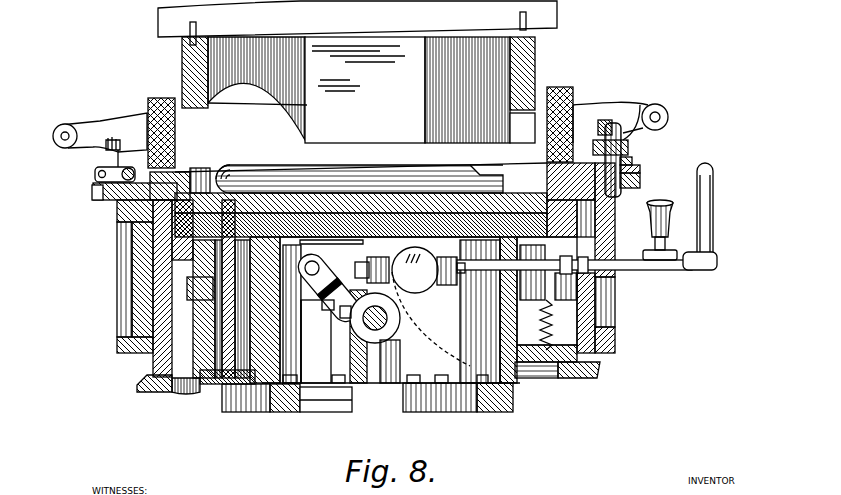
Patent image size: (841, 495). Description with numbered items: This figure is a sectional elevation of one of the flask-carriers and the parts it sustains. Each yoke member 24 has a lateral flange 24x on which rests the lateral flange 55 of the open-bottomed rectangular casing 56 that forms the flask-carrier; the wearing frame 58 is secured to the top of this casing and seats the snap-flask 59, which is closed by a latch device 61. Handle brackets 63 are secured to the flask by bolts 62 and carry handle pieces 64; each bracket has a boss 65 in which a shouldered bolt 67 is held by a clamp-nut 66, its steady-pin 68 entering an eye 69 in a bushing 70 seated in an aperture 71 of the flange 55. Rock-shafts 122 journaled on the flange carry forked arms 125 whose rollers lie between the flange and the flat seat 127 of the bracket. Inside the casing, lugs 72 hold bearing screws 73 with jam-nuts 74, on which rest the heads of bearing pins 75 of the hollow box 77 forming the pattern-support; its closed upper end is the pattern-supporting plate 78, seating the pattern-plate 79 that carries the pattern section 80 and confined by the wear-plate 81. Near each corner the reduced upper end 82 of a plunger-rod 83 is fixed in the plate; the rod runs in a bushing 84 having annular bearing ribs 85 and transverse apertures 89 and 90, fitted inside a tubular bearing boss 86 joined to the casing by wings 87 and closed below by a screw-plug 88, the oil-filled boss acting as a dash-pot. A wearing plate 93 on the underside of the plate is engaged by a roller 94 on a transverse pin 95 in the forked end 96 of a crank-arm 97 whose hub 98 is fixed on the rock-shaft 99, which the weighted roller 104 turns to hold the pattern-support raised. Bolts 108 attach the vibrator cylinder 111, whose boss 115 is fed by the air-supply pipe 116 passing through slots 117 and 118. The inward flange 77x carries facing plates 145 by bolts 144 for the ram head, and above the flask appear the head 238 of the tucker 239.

The head of the tucker 238 is at (357, 23).
The tucker 239 is at (358, 90).
The snap-flask 59 is at (170, 134).
The latch device 61 is at (58, 130).
The handle bracket 63 is at (103, 140).
The forked outwardly projecting arm 125 is at (114, 146).
The flat seat of the handle-bracket 127 is at (97, 170).
The parallel rock-shaft 122 is at (129, 167).
The wearing frame 58 is at (183, 171).
The lateral flange 55 is at (103, 201).
The lateral flange of yoke member 24x is at (117, 212).
The yoke member 24 is at (134, 294).
The flask-carrier casing 56 is at (154, 367).
The annular bearing rib 85 is at (200, 268).
The transverse aperture 90 is at (194, 311).
The bushing 84 is at (196, 330).
The reduced upper end of plunger-rod 82 is at (229, 210).
The plunger-rod 83 is at (236, 299).
The tubular bearing boss 86 is at (196, 358).
The wing 87 is at (184, 391).
The transverse aperture 89 is at (214, 385).
The screw-plug 88 is at (216, 395).
The facing plate 145 is at (327, 413).
The pattern-supporting plate 78 is at (361, 215).
The pattern section 80 is at (359, 179).
The wear-plate 81 is at (200, 180).
The pattern-plate 79 is at (347, 194).
The bolt 62 is at (576, 100).
The handle piece 64 is at (616, 104).
The clamp-nut 66 is at (632, 115).
The shouldered bolt 67 is at (606, 123).
The boss 65 is at (630, 148).
The steady-pin 68 is at (618, 196).
The eye 69 is at (633, 161).
The bushing 70 is at (641, 169).
The aperture 71 is at (641, 181).
The forked outer end of crank-arm 96 is at (600, 232).
The bearing pin 75 is at (596, 283).
The lug 72 is at (584, 354).
The bearing screw 73 is at (540, 386).
The jam-nut 74 is at (540, 299).
The pattern-support box 77 is at (284, 342).
The inwardly extending flange 77x is at (318, 360).
The bolt 144 is at (338, 375).
The roller 94 is at (308, 286).
The transverse pin 95 is at (320, 268).
The wearing plate 93 is at (359, 262).
The cylinder of vibrator 111 is at (431, 306).
The projecting boss 115 is at (450, 284).
The slot 118 is at (569, 258).
The slot 117 is at (590, 258).
The air-supply pipe 116 is at (712, 221).
The bolt 108 is at (400, 311).
The hub of crank-arm 98 is at (375, 331).
The weighted roller 104 is at (400, 345).
The crank-arm 97 is at (338, 312).
The rock-shaft 99 is at (352, 319).